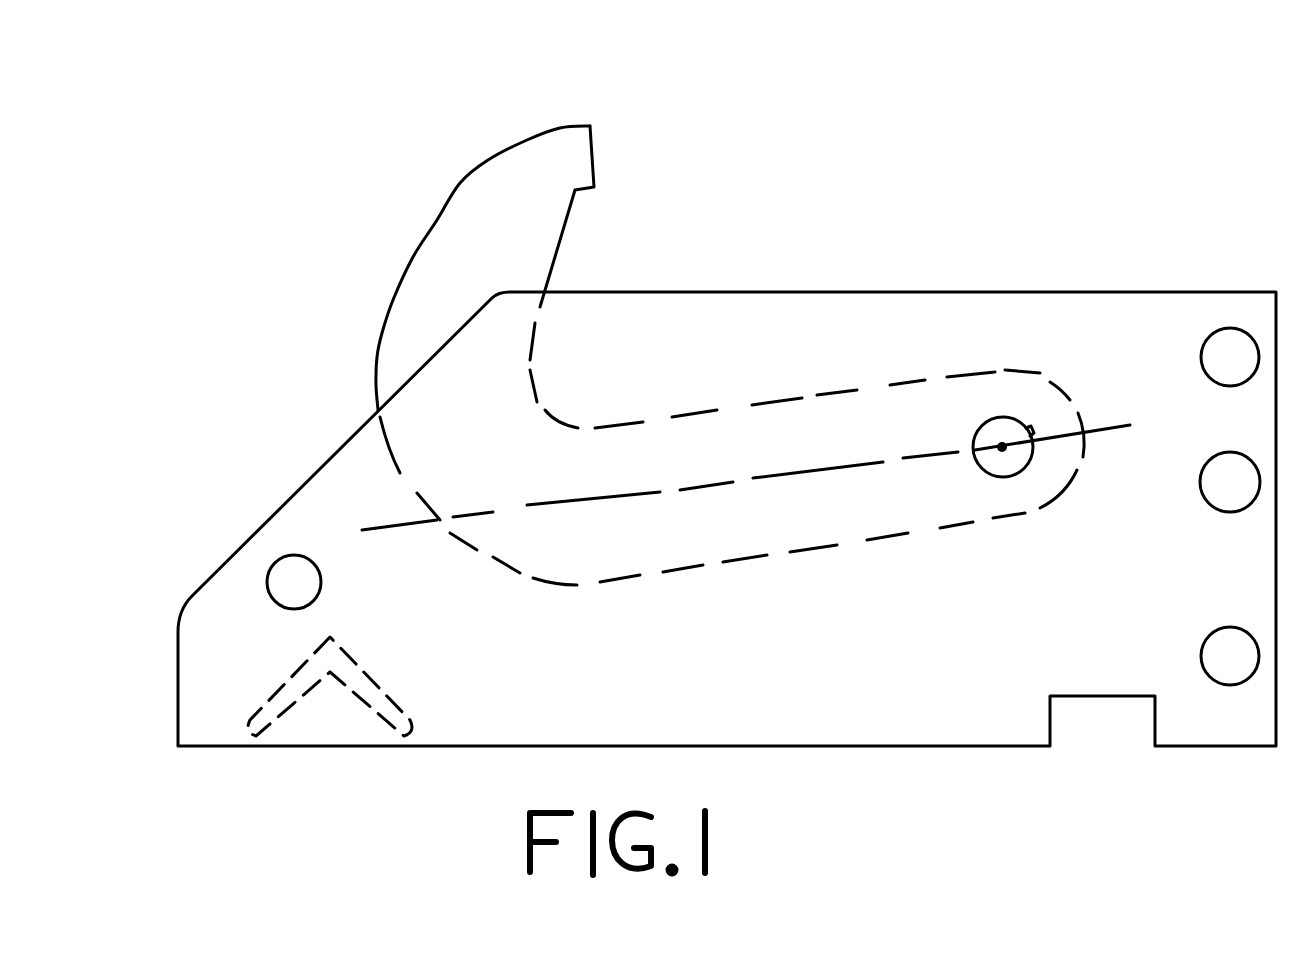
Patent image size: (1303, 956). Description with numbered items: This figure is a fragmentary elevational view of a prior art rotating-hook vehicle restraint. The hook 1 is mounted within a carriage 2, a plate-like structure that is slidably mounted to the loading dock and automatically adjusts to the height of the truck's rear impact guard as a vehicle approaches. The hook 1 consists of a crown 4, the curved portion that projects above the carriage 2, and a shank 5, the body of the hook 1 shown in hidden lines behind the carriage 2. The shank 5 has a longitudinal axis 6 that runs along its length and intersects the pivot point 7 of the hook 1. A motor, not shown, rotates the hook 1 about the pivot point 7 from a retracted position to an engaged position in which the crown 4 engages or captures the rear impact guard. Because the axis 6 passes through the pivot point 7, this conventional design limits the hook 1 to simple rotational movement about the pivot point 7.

The hook 1 is at (725, 346).
The carriage 2 is at (1155, 295).
The crown 4 is at (472, 235).
The shank 5 is at (753, 450).
The longitudinal axis 6 is at (793, 473).
The pivot point 7 is at (1003, 348).